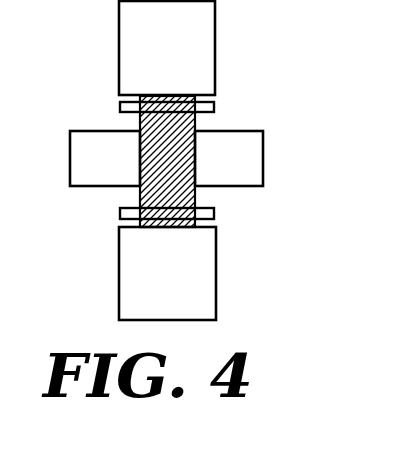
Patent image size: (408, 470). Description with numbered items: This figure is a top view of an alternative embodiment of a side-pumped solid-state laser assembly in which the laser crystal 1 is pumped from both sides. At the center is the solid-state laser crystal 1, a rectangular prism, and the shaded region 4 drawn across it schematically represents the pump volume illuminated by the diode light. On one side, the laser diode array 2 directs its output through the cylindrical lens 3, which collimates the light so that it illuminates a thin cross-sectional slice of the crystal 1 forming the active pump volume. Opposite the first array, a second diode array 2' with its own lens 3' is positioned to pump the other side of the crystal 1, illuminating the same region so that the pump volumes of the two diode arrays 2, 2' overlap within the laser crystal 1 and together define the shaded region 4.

The laser crystal 1 is at (102, 132).
The laser diode array 2 is at (186, 273).
The second diode array 2' is at (189, 48).
The cylindrical lens 3 is at (138, 220).
The lens 3' is at (188, 91).
The shaded region 4 is at (192, 150).